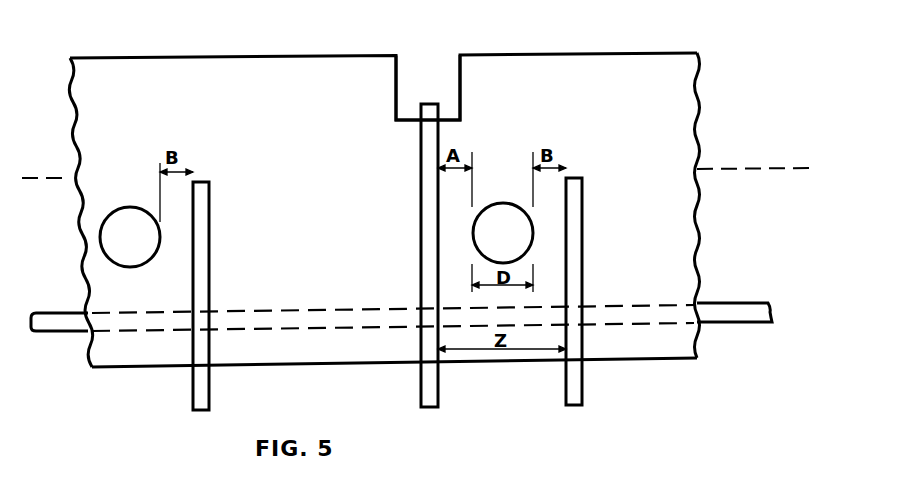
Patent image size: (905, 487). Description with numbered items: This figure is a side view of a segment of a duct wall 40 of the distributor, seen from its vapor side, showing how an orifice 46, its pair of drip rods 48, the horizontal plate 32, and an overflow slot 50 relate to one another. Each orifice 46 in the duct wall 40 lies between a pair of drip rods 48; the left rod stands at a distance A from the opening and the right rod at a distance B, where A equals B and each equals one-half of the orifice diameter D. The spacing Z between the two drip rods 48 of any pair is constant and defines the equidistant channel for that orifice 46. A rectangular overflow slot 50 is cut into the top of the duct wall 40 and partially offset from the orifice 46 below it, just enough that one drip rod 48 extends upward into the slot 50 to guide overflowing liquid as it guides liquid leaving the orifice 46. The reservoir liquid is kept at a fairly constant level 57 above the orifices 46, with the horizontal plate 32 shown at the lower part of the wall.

The horizontal plate 32 is at (40, 292).
The duct wall 40 is at (592, 53).
The orifice 46 is at (128, 183).
The drip rod 48 is at (211, 290).
The overflow slot 50 is at (414, 72).
The liquid level 57 is at (57, 176).